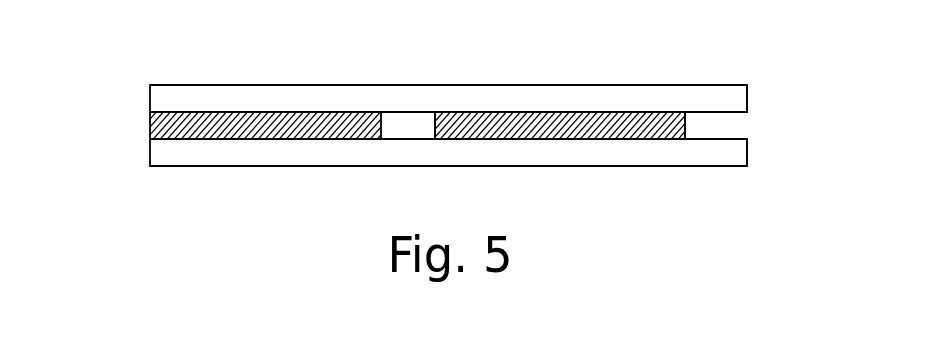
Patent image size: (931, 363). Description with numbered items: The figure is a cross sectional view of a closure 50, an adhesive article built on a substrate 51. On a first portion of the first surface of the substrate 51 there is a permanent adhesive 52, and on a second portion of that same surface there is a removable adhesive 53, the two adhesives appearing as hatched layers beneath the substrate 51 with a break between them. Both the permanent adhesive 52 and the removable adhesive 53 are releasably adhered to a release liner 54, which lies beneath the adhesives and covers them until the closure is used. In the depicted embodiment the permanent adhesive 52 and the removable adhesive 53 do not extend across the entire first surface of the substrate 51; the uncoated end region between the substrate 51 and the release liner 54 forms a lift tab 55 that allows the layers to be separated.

The closure 50 is at (110, 86).
The substrate 51 is at (718, 102).
The permanent adhesive 52 is at (195, 138).
The removable adhesive 53 is at (662, 125).
The release liner 54 is at (640, 150).
The lift tab 55 is at (740, 126).